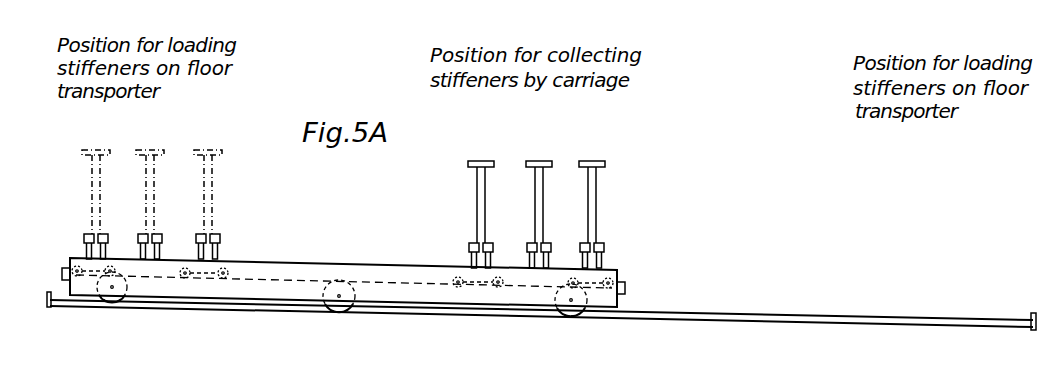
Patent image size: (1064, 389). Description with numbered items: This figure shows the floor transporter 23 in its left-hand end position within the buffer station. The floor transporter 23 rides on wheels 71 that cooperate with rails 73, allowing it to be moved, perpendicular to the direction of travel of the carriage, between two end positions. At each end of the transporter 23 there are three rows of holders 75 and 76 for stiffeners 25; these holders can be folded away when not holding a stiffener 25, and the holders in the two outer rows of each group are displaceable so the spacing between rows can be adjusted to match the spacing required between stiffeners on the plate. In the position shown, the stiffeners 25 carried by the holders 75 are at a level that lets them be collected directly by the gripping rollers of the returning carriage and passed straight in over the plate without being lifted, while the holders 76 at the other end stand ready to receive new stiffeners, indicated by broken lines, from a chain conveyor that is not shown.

The floor transporter 23 is at (311, 292).
The stiffener 25 is at (536, 201).
The wheel 71 is at (114, 303).
The rail 73 is at (253, 312).
The holder 75 is at (490, 255).
The holder 76 is at (105, 245).